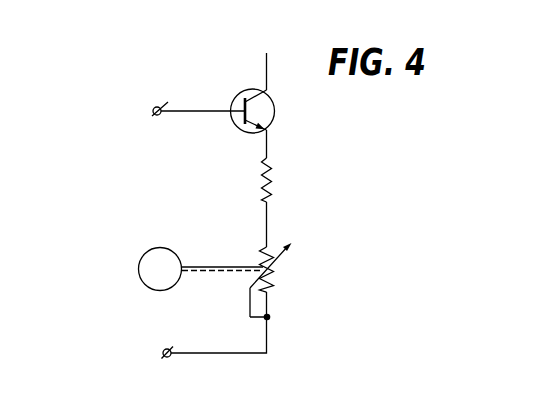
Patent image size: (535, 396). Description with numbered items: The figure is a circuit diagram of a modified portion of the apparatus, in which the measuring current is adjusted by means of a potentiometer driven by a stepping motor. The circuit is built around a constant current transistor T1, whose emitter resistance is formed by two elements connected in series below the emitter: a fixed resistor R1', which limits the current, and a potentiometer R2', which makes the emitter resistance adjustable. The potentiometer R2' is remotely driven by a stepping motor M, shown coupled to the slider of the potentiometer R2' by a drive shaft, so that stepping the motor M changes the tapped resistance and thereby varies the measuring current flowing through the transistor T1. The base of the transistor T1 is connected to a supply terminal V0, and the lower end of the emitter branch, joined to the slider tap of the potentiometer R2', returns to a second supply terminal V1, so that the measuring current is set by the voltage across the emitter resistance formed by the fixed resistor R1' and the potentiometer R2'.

The constant current transistor T1 is at (266, 111).
The fixed resistor R1' is at (278, 180).
The potentiometer R2' is at (275, 281).
The stepping motor M is at (201, 269).
The supply voltage terminal - V0 is at (183, 114).
The supply voltage terminal - V1 is at (152, 353).